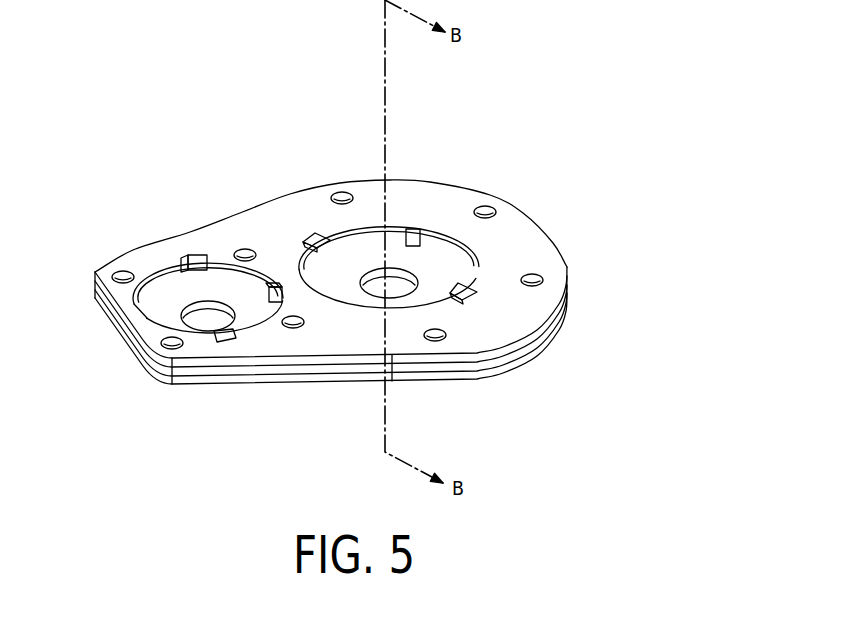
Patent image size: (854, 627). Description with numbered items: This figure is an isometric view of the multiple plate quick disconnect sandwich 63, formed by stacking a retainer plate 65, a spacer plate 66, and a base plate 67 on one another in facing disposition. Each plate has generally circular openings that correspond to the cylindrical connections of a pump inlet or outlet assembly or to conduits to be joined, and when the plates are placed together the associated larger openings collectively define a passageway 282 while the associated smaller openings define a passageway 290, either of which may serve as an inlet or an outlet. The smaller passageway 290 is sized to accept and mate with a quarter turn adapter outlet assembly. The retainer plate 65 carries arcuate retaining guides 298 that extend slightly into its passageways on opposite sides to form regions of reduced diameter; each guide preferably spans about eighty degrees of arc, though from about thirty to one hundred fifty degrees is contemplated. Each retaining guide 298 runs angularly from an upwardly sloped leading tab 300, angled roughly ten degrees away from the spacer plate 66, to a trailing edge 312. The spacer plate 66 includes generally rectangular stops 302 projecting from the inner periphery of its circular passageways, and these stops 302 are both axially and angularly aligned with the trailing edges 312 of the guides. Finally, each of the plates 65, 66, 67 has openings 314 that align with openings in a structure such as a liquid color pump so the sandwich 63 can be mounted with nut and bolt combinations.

The multiple plate quick disconnect sandwich 63 is at (585, 235).
The retainer plate 65 is at (493, 307).
The spacer plate 66 is at (480, 350).
The base plate 67 is at (437, 378).
The passageway 282 is at (368, 252).
The passageway 290 is at (180, 292).
The arcuate retaining guide 298 is at (222, 263).
The leading tab 300 is at (195, 257).
The stop 302 is at (460, 288).
The trailing edge 312 is at (414, 222).
The opening 314 is at (531, 272).